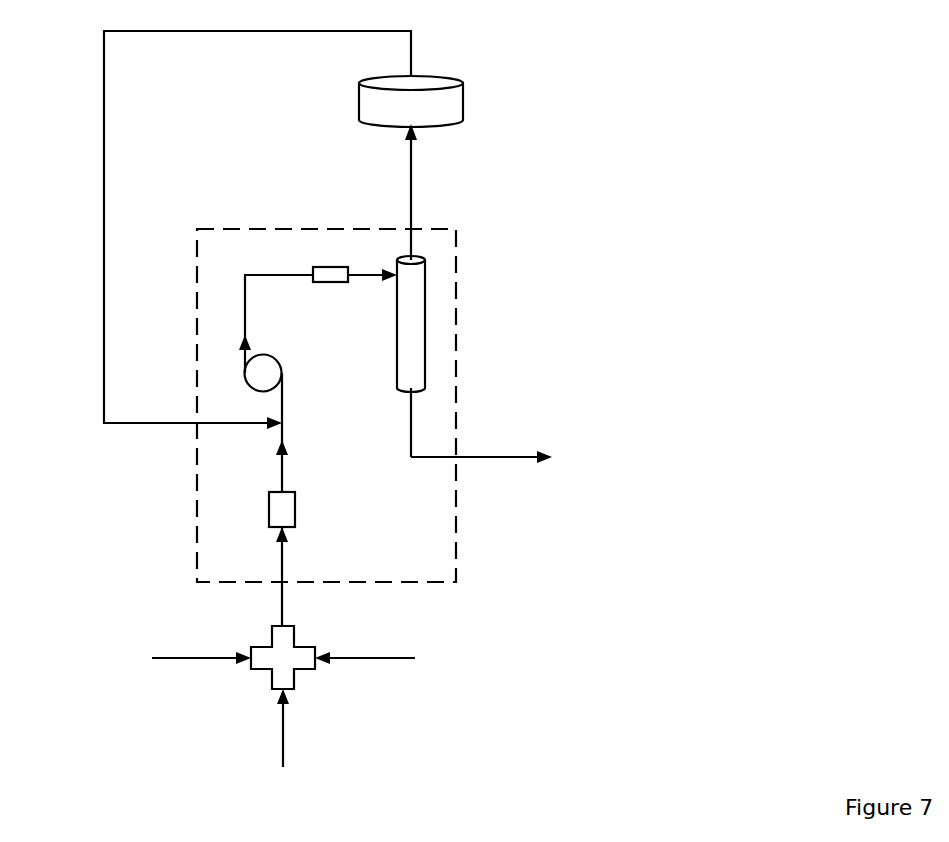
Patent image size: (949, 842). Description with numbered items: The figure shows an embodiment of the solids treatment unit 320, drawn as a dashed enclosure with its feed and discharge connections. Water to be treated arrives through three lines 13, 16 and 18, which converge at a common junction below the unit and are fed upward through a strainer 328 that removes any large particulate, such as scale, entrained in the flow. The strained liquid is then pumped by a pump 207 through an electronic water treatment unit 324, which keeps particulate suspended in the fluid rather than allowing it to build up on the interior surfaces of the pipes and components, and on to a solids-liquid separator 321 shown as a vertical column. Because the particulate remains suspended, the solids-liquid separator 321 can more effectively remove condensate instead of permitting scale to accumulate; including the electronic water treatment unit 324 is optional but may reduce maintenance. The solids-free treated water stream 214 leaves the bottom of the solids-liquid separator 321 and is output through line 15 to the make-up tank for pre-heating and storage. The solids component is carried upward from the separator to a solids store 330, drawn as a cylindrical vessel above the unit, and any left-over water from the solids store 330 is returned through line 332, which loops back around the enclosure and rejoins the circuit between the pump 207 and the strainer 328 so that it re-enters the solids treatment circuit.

The line 13 is at (299, 728).
The line 15 is at (481, 473).
The line 16 is at (365, 646).
The line 18 is at (201, 646).
The pump 207 is at (280, 372).
The treated water stream 214 is at (386, 422).
The solids treatment unit 320 is at (279, 196).
The solids-liquid separator 321 is at (414, 320).
The electronic water treatment unit 324 is at (327, 267).
The strainer 328 is at (295, 510).
The solids store 330 is at (411, 168).
The line 332 is at (233, 230).